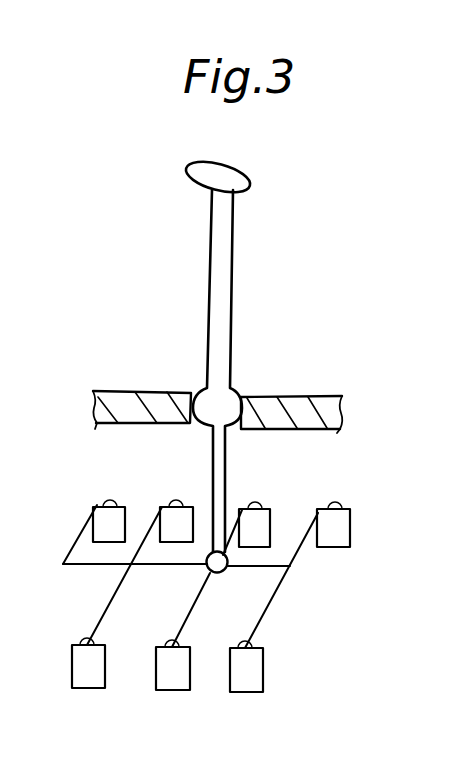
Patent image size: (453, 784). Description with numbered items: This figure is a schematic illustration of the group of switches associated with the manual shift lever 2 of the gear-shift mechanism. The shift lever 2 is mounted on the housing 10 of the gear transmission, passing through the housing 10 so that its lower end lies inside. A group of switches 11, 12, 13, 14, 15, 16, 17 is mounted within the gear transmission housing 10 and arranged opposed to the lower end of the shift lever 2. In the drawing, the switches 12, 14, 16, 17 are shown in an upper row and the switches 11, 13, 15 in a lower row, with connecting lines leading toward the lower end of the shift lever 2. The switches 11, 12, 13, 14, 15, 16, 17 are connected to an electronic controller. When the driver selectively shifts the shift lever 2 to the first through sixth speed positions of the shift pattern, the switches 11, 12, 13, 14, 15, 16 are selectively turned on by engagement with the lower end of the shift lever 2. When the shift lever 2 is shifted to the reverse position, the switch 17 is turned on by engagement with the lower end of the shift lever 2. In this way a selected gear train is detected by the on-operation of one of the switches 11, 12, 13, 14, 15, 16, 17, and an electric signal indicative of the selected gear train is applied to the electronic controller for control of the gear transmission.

The manual shift lever 2 is at (235, 179).
The housing 10 is at (322, 410).
The switch 11 is at (253, 692).
The switch 12 is at (352, 512).
The switch 13 is at (178, 690).
The switch 14 is at (272, 508).
The switch 15 is at (93, 688).
The switch 16 is at (165, 503).
The switch 17 is at (98, 503).